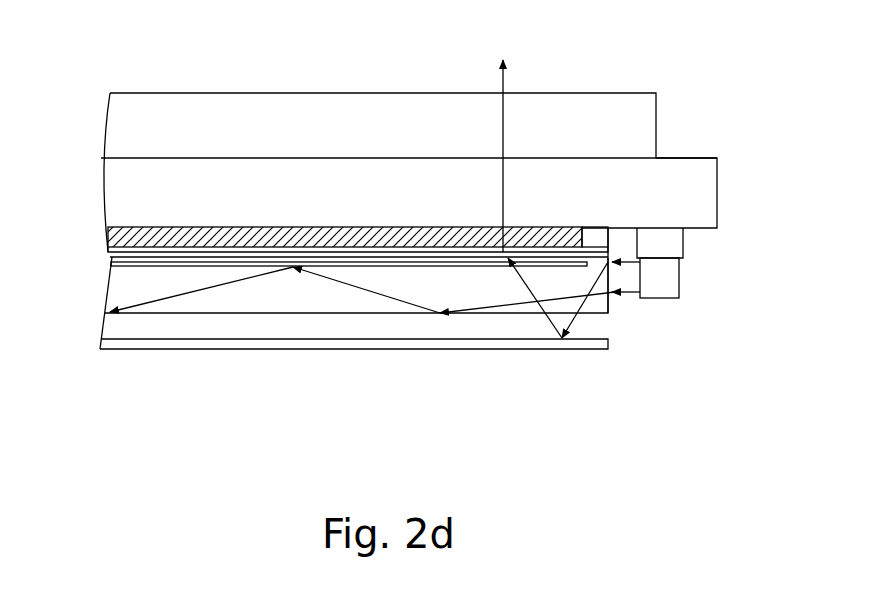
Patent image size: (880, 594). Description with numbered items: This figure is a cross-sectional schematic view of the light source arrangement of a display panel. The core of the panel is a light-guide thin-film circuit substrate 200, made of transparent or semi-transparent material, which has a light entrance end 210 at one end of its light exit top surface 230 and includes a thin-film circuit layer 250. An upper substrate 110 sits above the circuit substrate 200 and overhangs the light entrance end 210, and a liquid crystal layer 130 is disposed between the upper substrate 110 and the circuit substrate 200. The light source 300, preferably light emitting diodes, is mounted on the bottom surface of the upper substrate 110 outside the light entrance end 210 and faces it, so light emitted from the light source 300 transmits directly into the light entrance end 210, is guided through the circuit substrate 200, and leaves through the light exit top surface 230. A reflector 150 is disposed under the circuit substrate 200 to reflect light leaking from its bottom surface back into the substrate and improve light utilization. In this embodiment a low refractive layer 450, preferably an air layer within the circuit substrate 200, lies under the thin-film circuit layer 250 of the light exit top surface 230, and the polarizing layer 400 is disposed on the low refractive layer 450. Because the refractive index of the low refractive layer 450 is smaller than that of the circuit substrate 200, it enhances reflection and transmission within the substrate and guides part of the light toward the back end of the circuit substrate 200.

The upper substrate 110 is at (677, 185).
The liquid crystal layer 130 is at (302, 237).
The reflector 150 is at (237, 343).
The light-guide thin-film circuit substrate 200 is at (322, 300).
The light entrance end 210 is at (603, 283).
The light exit top surface 230 is at (167, 252).
The thin-film circuit layer 250 is at (110, 261).
The light source 300 is at (658, 253).
The polarizing layer 400 is at (110, 251).
The low refractive layer 450 is at (105, 265).